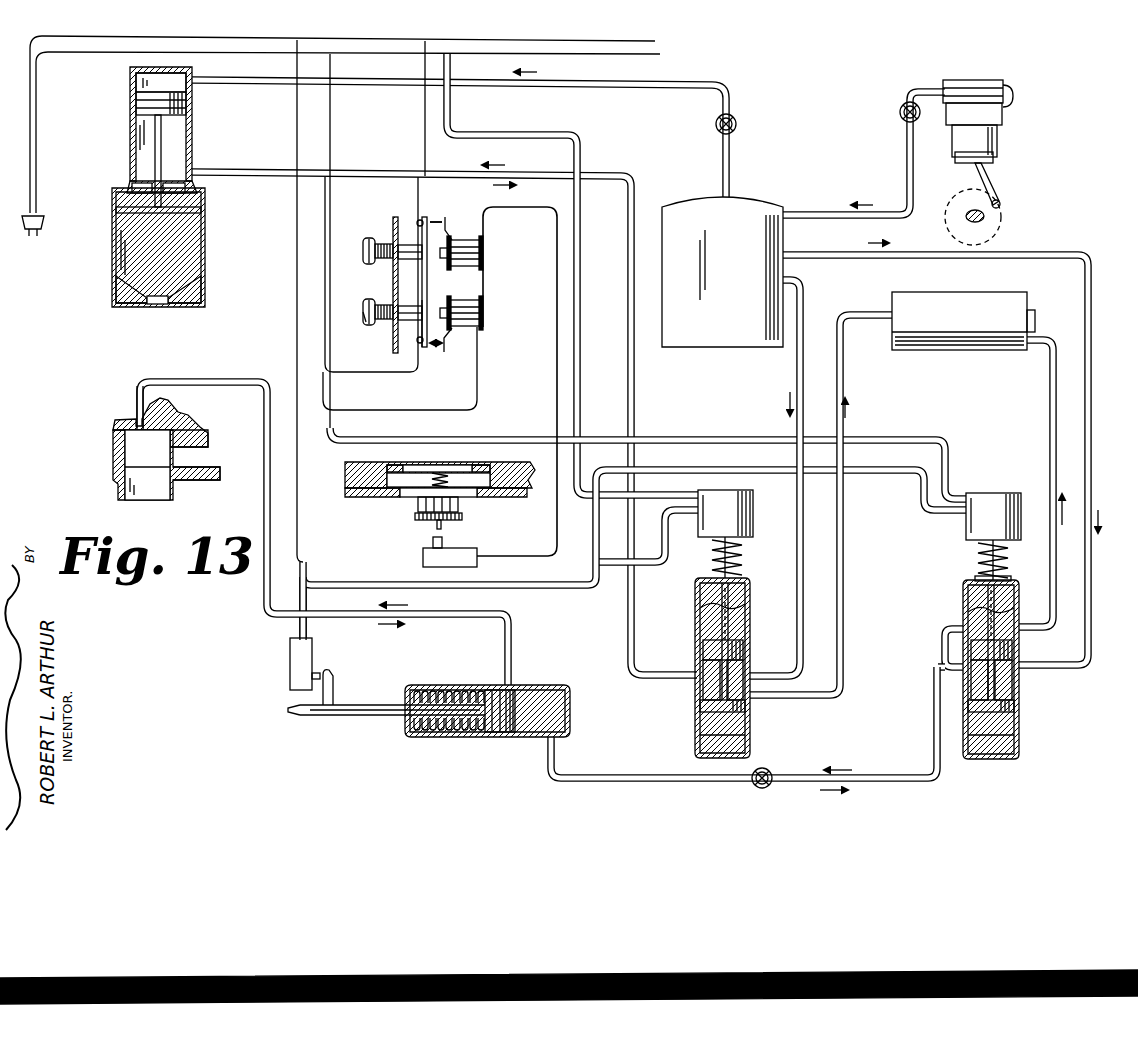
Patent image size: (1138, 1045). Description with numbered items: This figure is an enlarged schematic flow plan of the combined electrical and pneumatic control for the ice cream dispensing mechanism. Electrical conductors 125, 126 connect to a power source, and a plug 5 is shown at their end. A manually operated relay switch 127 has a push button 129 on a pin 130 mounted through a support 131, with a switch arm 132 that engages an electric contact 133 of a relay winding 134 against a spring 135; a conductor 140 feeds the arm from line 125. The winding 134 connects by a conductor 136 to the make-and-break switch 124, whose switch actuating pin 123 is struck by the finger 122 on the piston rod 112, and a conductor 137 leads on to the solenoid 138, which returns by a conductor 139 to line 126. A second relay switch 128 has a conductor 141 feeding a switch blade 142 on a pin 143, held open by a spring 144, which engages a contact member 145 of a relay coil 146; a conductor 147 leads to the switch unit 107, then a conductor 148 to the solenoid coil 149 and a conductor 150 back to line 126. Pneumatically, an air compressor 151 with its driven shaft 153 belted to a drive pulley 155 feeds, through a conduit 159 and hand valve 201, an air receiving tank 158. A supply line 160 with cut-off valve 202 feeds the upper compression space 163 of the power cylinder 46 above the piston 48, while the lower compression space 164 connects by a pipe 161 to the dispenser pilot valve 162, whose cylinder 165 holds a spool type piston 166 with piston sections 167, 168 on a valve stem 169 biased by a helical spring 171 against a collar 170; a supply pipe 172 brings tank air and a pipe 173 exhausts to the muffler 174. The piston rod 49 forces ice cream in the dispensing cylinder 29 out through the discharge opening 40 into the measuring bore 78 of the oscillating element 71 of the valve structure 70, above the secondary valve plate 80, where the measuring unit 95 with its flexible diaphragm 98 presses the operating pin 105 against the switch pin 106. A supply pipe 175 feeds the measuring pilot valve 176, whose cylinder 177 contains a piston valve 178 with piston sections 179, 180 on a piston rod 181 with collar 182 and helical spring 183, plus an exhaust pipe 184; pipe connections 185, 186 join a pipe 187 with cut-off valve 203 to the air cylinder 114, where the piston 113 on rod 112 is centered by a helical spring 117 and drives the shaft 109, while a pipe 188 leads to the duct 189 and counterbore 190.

The electrical plug 5 is at (28, 207).
The dispensing cylinder 29 is at (98, 254).
The discharge opening 40 is at (157, 296).
The power cylinder 46 is at (193, 140).
The piston 48 is at (137, 105).
The piston rod 49 is at (154, 158).
The valve structure 70 is at (98, 433).
The oscillating element 71 is at (186, 436).
The measuring bore 78 is at (130, 470).
The secondary valve plate 80 is at (193, 481).
The measuring unit 95 is at (358, 458).
The flexible diaphragm 98 is at (462, 445).
The operating pin 105 is at (416, 518).
The switch pin 106 is at (433, 541).
The switch unit 107 is at (468, 553).
The shaft 109 is at (306, 714).
The piston rod 112 is at (398, 716).
The piston 113 is at (505, 733).
The air cylinder 114 is at (549, 685).
The helical spring 117 is at (461, 690).
The finger 122 is at (334, 688).
The switch actuating pin 123 is at (317, 672).
The make-and-break switch 124 is at (289, 664).
The electrical conductor 125 is at (468, 32).
The electrical conductor 126 is at (352, 53).
The manually operated relay switch 127 is at (358, 306).
The manually operated relay switch 128 is at (358, 248).
The push button 129 is at (365, 321).
The pin 130 is at (406, 308).
The support 131 is at (392, 225).
The switch arm 132 is at (428, 308).
The electric contact 133 is at (445, 345).
The relay winding 134 is at (465, 305).
The spring 135 is at (382, 305).
The conductor 136 is at (478, 383).
The conductor 137 is at (340, 585).
The solenoid 138 is at (996, 500).
The conductor 139 is at (331, 142).
The conductor 140 is at (296, 150).
The conductor 141 is at (424, 122).
The switch blade 142 is at (432, 215).
The pin 143 is at (404, 245).
The spring 144 is at (381, 242).
The contact member 145 is at (447, 228).
The relay coil 146 is at (463, 255).
The conductor 147 is at (555, 317).
The conductor 148 is at (500, 557).
The solenoid coil 149 is at (748, 515).
The conductor 150 is at (580, 373).
The air compressor 151 is at (1017, 164).
The driven shaft 153 is at (1000, 210).
The drive pulley 155 is at (955, 192).
The air receiving tank 158 is at (733, 328).
The conduit 159 is at (907, 178).
The supply line 160 is at (703, 81).
The pipe 161 is at (244, 180).
The dispenser pilot valve 162 is at (694, 637).
The compression space 163 is at (137, 82).
The compression space 164 is at (138, 140).
The cylinder 165 is at (752, 620).
The spool type piston 166 is at (705, 700).
The piston section 167 is at (745, 660).
The piston section 168 is at (748, 708).
The valve stem 169 is at (740, 585).
The collar 170 is at (718, 589).
The helical spring 171 is at (712, 549).
The supply pipe 172 is at (800, 684).
The pipe 173 is at (838, 575).
The muffler 174 is at (960, 300).
The supply pipe 175 is at (1040, 253).
The measuring pilot valve 176 is at (1022, 694).
The cylinder 177 is at (965, 612).
The piston valve 178 is at (1000, 690).
The piston section 179 is at (1012, 650).
The piston section 180 is at (970, 748).
The piston rod 181 is at (1000, 615).
The collar 182 is at (978, 578).
The helical spring 183 is at (980, 555).
The exhaust pipe 184 is at (1048, 412).
The pipe connection 185 is at (945, 630).
The pipe connection 186 is at (950, 670).
The pipe 187 is at (627, 779).
The pipe 188 is at (205, 382).
The duct 189 is at (132, 426).
The counterbore 190 is at (130, 441).
The hand valve 201 is at (908, 102).
The cut-off valve 202 is at (736, 126).
The cut-off valve 203 is at (770, 786).